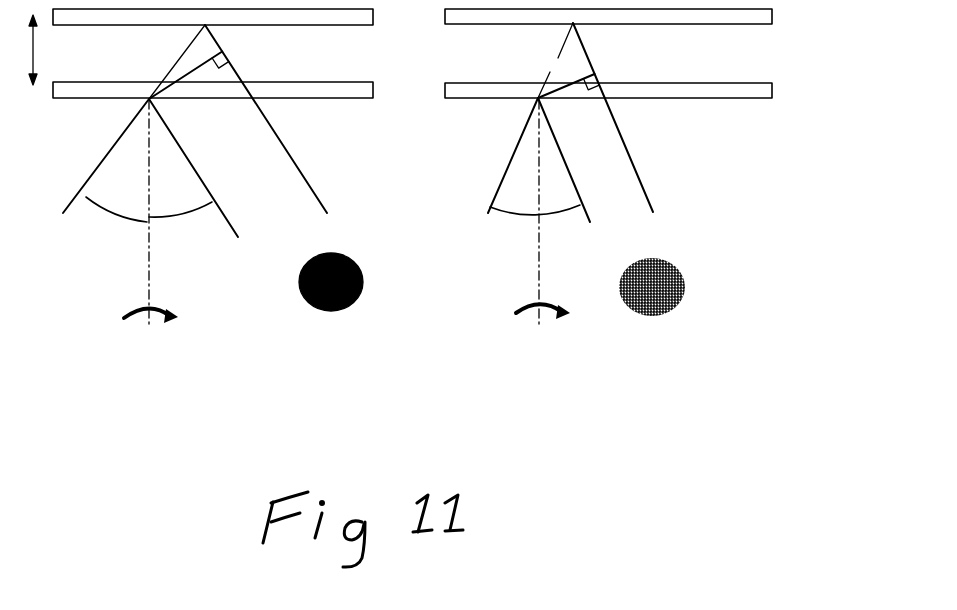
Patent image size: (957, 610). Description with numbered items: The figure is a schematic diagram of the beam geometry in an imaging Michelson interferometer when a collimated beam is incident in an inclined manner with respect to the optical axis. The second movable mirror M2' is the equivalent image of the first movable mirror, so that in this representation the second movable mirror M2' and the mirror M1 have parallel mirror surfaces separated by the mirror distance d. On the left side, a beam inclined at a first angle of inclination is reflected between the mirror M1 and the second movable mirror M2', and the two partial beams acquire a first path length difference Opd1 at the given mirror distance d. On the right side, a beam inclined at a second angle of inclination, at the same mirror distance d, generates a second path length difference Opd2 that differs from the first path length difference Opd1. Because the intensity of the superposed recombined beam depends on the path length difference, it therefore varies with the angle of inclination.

The mirror M1 is at (412, 90).
The second movable mirror M2' is at (412, 30).
The mirror distance d is at (39, 50).
The first path length difference Opd1 is at (209, 119).
The second path length difference Opd2 is at (561, 117).